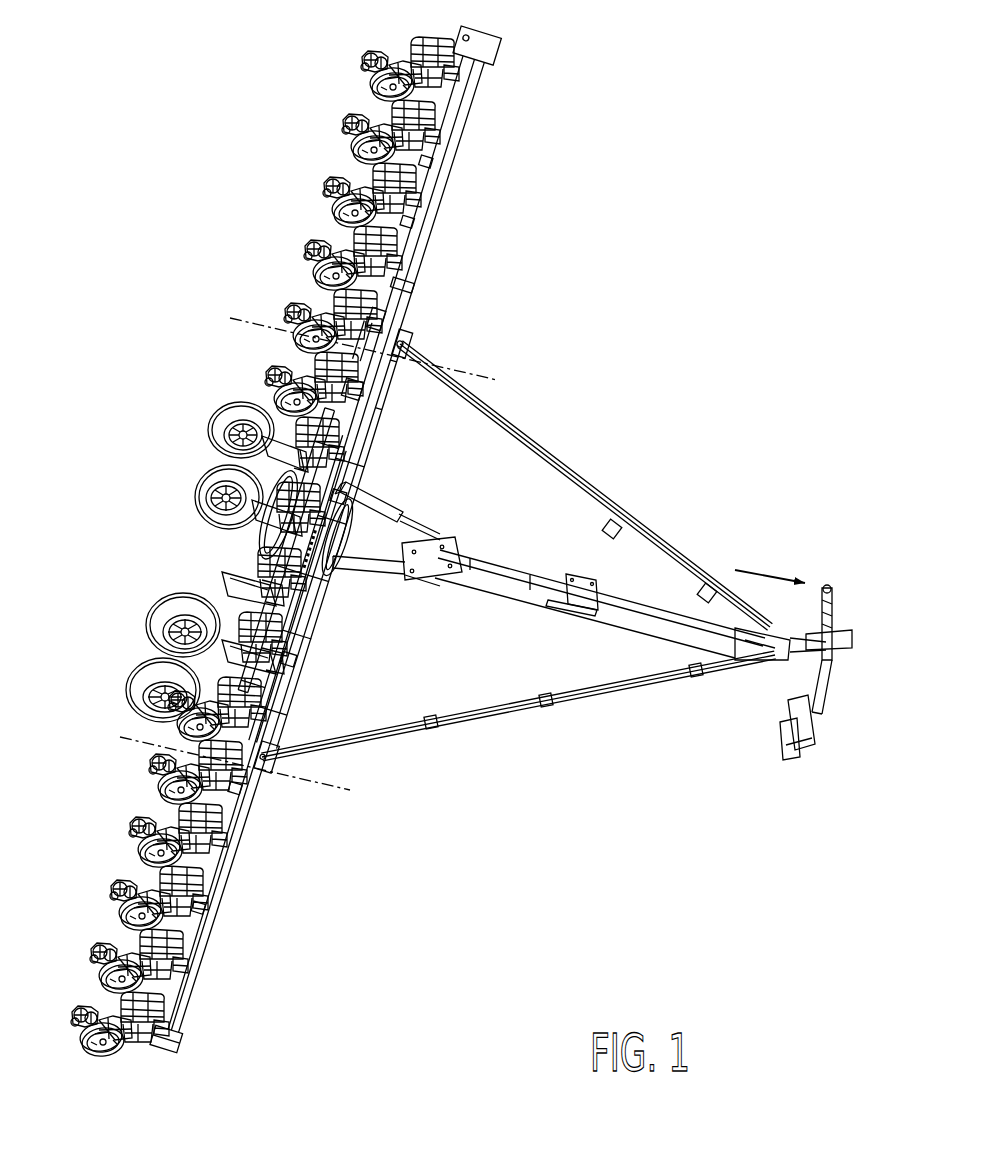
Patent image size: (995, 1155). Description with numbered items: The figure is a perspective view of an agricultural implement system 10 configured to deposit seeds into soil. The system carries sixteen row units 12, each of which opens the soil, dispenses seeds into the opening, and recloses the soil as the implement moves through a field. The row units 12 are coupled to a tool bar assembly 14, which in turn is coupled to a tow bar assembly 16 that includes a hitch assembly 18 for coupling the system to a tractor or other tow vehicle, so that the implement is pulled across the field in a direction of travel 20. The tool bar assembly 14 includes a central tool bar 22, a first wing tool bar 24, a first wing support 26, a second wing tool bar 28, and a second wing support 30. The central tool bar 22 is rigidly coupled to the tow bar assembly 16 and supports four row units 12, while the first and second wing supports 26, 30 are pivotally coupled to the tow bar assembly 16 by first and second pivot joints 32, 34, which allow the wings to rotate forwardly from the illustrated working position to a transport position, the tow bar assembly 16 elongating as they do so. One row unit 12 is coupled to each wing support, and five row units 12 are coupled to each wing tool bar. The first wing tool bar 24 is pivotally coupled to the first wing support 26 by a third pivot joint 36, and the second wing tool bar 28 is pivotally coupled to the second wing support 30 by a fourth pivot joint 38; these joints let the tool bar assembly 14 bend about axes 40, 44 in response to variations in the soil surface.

The agricultural implement system 10 is at (660, 156).
The row unit 12 is at (340, 167).
The tool bar assembly 14 is at (237, 303).
The tow bar assembly 16 is at (663, 613).
The hitch assembly 18 is at (840, 733).
The direction of travel 20 is at (768, 570).
The central tool bar 22 is at (280, 565).
The first wing tool bar 24 is at (452, 117).
The first wing support 26 is at (370, 387).
The second wing tool bar 28 is at (193, 950).
The second wing support 30 is at (283, 673).
The first pivot joint 32 is at (360, 485).
The second pivot joint 34 is at (345, 577).
The third pivot joint 36 is at (388, 333).
The fourth pivot joint 38 is at (262, 747).
The axis 40 is at (492, 377).
The axis 44 is at (338, 788).